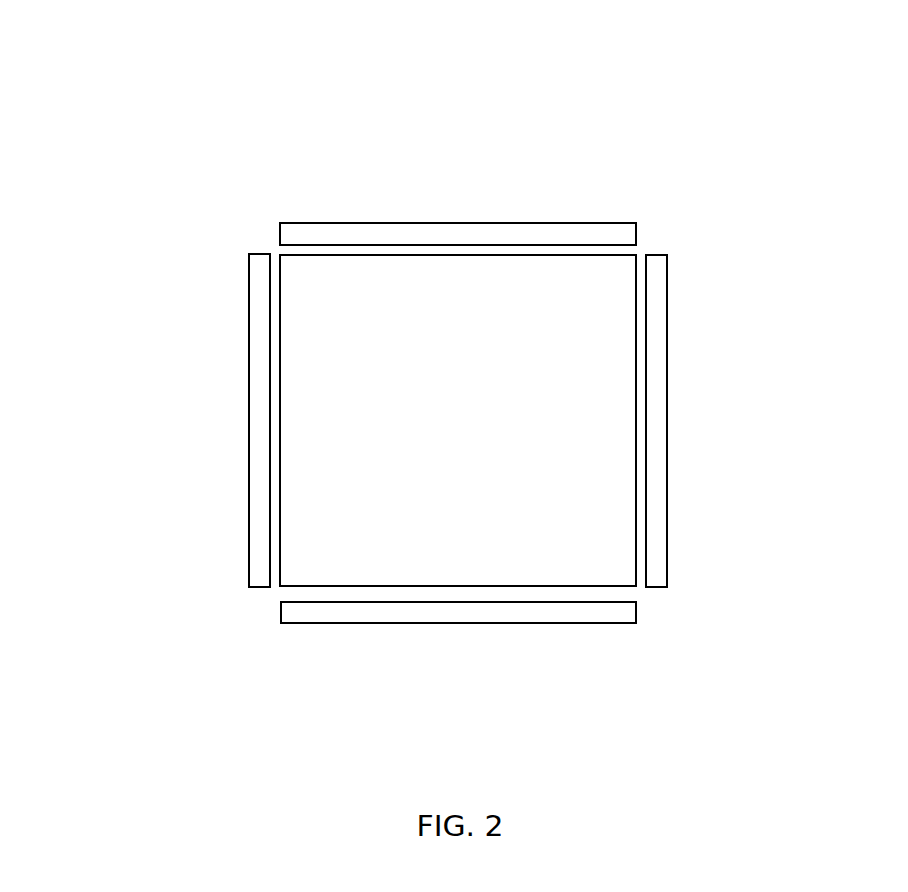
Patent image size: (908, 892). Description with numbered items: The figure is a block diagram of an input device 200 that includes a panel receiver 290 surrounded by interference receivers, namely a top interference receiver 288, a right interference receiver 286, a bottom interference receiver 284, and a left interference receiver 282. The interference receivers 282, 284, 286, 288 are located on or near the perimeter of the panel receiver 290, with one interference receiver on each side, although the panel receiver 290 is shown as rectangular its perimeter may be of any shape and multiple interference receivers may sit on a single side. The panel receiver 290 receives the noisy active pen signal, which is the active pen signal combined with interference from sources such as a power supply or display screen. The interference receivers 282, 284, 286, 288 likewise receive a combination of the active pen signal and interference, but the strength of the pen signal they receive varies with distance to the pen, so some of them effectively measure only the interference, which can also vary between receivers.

The input device 200 is at (436, 374).
The left interference receiver 282 is at (259, 364).
The bottom interference receiver 284 is at (433, 610).
The right interference receiver 286 is at (657, 333).
The top interference receiver 288 is at (529, 234).
The panel receiver 290 is at (442, 446).